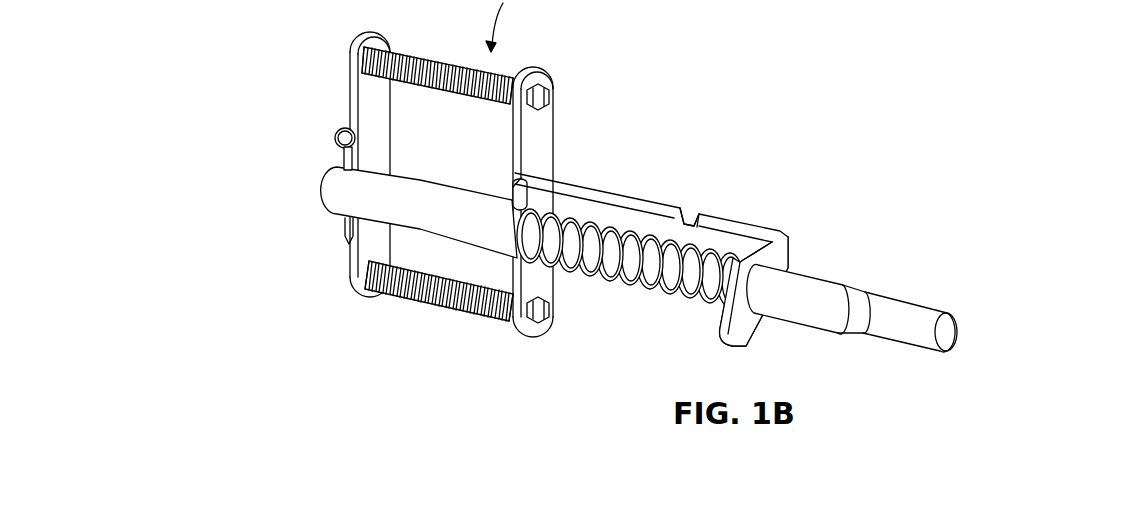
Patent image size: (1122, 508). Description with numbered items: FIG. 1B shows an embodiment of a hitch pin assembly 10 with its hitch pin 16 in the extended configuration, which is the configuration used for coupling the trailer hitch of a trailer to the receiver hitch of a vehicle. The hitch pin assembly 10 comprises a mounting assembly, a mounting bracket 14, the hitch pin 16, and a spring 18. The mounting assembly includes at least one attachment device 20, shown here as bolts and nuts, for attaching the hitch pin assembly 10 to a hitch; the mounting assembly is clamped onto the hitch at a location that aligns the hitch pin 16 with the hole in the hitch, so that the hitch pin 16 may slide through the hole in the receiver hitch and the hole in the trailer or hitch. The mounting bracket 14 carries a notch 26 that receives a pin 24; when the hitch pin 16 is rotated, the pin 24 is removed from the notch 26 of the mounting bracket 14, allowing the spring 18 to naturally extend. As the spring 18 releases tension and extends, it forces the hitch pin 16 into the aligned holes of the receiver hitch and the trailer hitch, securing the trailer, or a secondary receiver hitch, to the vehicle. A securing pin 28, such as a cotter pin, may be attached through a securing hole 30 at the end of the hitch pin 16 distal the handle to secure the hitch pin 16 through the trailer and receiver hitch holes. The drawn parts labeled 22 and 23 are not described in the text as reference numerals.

The hitch pin assembly 10 is at (288, 50).
The mounting bracket 14 is at (770, 230).
The hitch pin 16 is at (825, 278).
The spring 18 is at (630, 228).
The attachment device 20 is at (443, 322).
The end plate 22 is at (370, 164).
The upper spring 23 is at (437, 75).
The pin 24 is at (521, 186).
The notch 26 is at (702, 198).
The securing pin 28 is at (336, 128).
The securing hole 30 is at (336, 178).